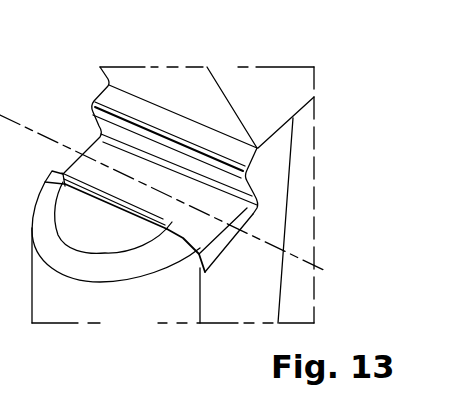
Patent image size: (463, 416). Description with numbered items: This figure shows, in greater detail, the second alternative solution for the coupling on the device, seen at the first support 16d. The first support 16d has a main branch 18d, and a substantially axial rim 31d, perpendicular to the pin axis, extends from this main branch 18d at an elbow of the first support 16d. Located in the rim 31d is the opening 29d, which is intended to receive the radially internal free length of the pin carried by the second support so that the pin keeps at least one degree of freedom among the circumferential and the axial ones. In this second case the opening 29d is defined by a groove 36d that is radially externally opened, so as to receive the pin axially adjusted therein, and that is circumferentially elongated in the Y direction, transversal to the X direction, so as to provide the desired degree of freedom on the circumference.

The first support 16d is at (286, 78).
The main branch 18d is at (269, 180).
The opening 29d is at (247, 220).
The rim 31d is at (90, 224).
The groove 36d is at (219, 241).
The Y direction Y is at (23, 127).